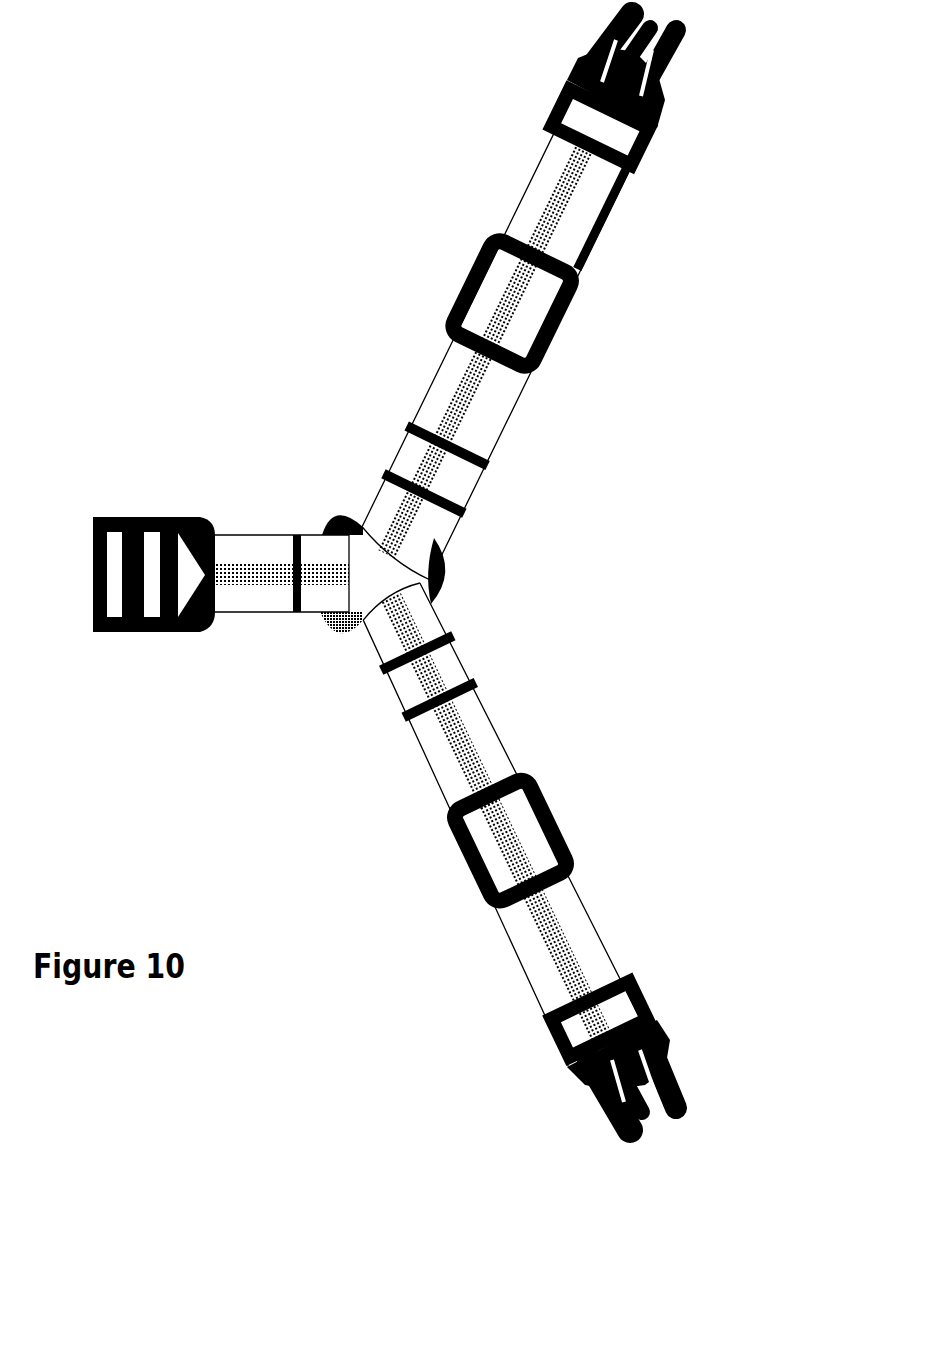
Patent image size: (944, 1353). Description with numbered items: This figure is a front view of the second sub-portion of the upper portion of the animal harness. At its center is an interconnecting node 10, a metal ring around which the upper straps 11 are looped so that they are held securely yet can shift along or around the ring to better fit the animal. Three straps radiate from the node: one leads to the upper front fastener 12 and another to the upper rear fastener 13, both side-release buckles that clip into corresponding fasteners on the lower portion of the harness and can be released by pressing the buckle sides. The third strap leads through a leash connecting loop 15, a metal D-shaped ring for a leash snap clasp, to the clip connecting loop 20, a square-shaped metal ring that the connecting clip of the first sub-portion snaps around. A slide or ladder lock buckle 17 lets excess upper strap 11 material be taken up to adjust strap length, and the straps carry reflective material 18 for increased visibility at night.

The interconnecting node 10 is at (448, 563).
The upper straps 11 is at (580, 932).
The upper front fastener 12 is at (660, 90).
The upper rear fastener 13 is at (615, 1065).
The leash connecting loop 15 is at (208, 547).
The slide or ladder lock buckle 17 is at (557, 817).
The reflective material 18 is at (473, 758).
The clip connecting loop 20 is at (98, 517).